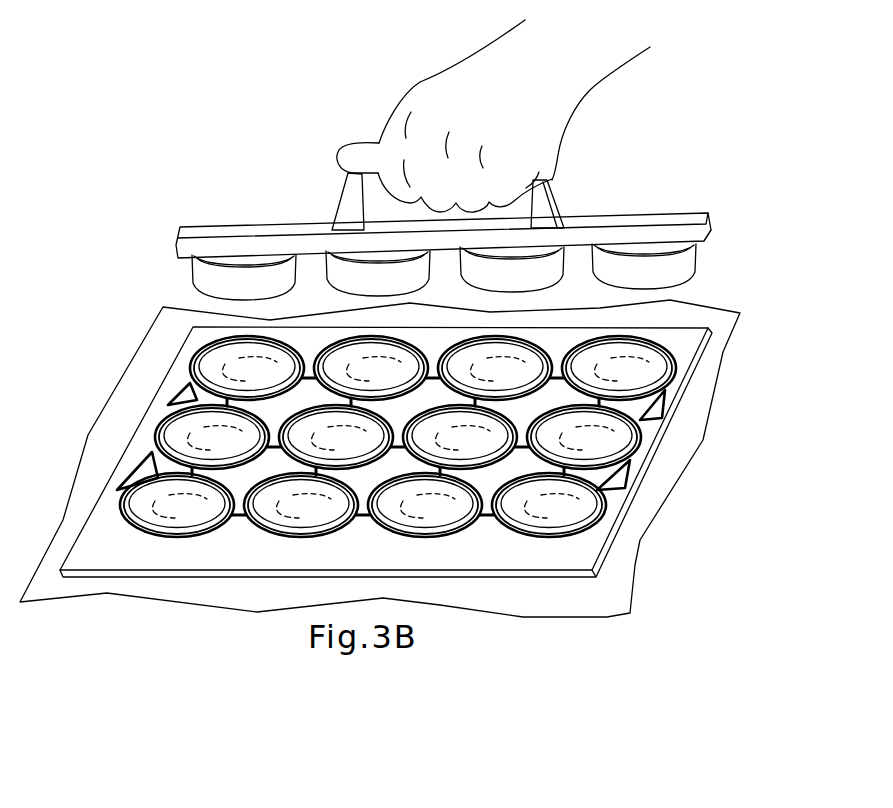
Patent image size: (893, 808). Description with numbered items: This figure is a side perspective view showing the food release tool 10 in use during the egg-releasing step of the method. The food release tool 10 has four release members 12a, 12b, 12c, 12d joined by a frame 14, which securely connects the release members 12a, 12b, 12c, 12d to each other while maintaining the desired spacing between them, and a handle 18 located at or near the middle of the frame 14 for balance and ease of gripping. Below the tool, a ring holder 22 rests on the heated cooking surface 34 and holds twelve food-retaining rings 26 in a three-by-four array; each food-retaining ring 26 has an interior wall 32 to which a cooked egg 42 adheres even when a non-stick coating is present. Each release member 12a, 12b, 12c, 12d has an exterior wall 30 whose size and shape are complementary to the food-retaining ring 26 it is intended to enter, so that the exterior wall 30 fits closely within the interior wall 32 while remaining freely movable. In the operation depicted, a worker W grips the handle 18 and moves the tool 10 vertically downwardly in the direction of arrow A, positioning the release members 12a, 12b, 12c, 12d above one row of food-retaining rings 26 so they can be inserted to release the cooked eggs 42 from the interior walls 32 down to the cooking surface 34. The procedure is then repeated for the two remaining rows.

The food release tool 10 is at (457, 215).
The release member 12a is at (262, 290).
The release member 12b is at (394, 287).
The release member 12c is at (524, 284).
The release member 12d is at (660, 281).
The frame 14 is at (683, 213).
The handle 18 is at (562, 198).
The ring holder 22 is at (404, 424).
The food-retaining ring 26 is at (197, 348).
The exterior wall 30 is at (704, 258).
The interior wall 32 is at (622, 343).
The cooking surface 34 is at (647, 490).
The cooked egg 42 is at (237, 372).
The worker W is at (517, 96).
The arrow A is at (244, 202).